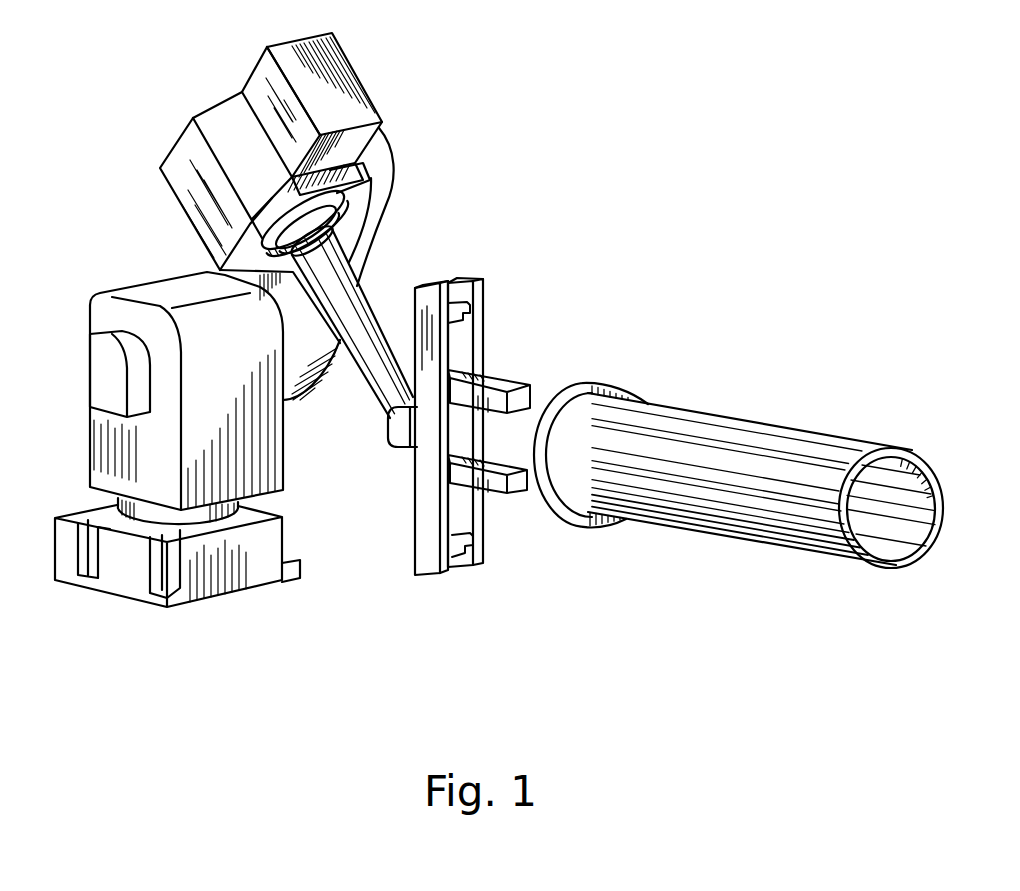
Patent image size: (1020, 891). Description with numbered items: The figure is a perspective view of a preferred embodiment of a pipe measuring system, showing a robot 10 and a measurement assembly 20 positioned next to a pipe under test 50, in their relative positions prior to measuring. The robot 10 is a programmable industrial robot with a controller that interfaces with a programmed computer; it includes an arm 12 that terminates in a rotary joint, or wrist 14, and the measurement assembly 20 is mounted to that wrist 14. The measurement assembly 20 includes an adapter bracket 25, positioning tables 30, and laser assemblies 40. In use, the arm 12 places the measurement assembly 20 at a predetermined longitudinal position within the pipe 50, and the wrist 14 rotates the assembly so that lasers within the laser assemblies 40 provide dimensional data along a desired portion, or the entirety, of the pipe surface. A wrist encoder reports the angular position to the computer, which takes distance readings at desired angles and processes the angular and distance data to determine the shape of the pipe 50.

The robot 10 is at (210, 598).
The arm 12 is at (357, 288).
The rotary joint, or wrist 14 is at (390, 440).
The measurement assembly 20 is at (486, 442).
The adapter bracket 25 is at (447, 283).
The positioning tables 30 is at (469, 313).
The laser assemblies 40 is at (498, 383).
The pipe under test 50 is at (780, 553).